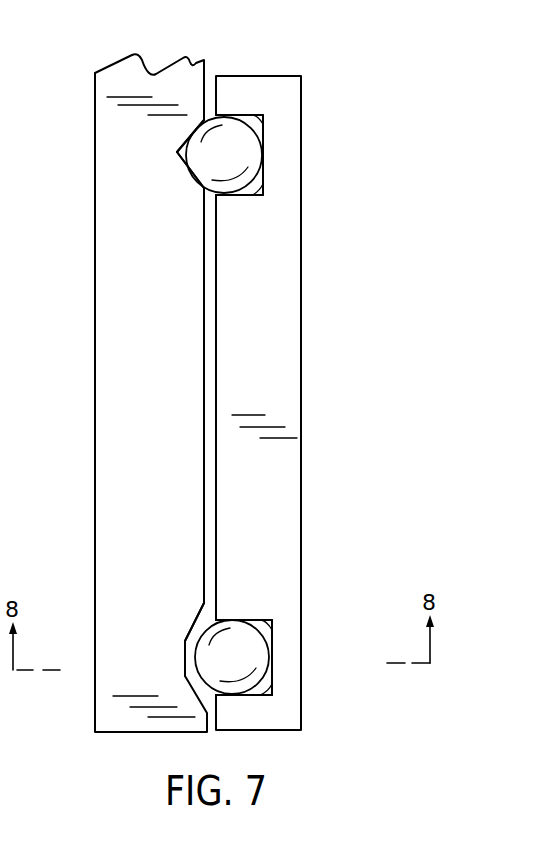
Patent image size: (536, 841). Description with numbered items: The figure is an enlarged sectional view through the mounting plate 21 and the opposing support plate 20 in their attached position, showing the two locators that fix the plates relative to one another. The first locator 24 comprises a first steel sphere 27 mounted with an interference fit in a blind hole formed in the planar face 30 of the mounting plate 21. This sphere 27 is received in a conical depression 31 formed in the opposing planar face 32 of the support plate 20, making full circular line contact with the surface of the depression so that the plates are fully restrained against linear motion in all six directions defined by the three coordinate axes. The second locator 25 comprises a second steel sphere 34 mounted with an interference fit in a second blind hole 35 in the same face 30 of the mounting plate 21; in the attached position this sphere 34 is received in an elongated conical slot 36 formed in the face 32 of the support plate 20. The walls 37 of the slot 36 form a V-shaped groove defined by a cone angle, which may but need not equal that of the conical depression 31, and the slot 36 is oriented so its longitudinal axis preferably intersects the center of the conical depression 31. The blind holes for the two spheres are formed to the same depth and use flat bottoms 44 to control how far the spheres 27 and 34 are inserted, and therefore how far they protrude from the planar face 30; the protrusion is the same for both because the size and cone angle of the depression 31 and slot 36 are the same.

The support plate 20 is at (113, 313).
The mounting plate 21 is at (288, 349).
The first locator 24 is at (245, 97).
The second locator 25 is at (251, 592).
The first steel sphere 27 is at (249, 148).
The planar face 30 is at (210, 364).
The conical depression 31 is at (178, 153).
The planar face 32 is at (207, 245).
The second steel sphere 34 is at (263, 655).
The blind hole 35 is at (277, 693).
The elongated conical slot 36 is at (197, 620).
The walls 37 is at (194, 645).
The flat bottoms 44 is at (258, 195).